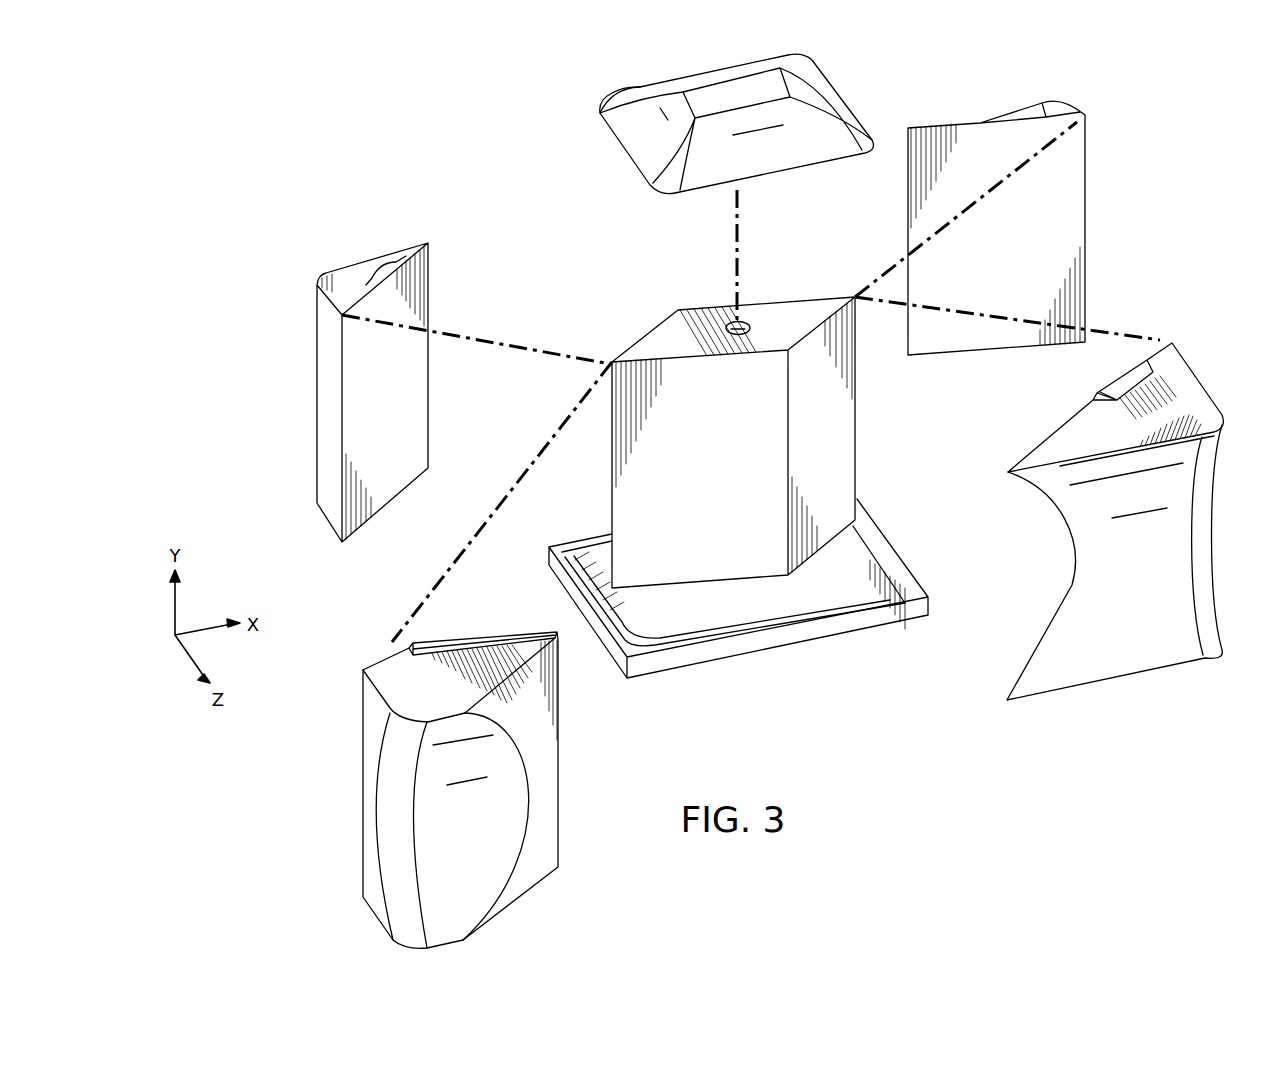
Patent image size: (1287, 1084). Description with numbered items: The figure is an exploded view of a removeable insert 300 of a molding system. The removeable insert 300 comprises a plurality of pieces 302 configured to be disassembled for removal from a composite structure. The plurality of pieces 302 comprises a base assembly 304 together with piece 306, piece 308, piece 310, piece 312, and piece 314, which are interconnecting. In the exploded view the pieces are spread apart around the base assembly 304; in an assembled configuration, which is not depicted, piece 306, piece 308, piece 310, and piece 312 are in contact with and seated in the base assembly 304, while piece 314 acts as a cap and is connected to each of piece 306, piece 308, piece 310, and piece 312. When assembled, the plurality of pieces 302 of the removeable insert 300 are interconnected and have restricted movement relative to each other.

The removeable insert 300 is at (272, 110).
The plurality of pieces 302 is at (417, 150).
The base assembly 304 is at (660, 330).
The piece 306 is at (352, 268).
The piece 308 is at (368, 860).
The piece 310 is at (1080, 198).
The piece 312 is at (1193, 387).
The piece 314 is at (632, 130).